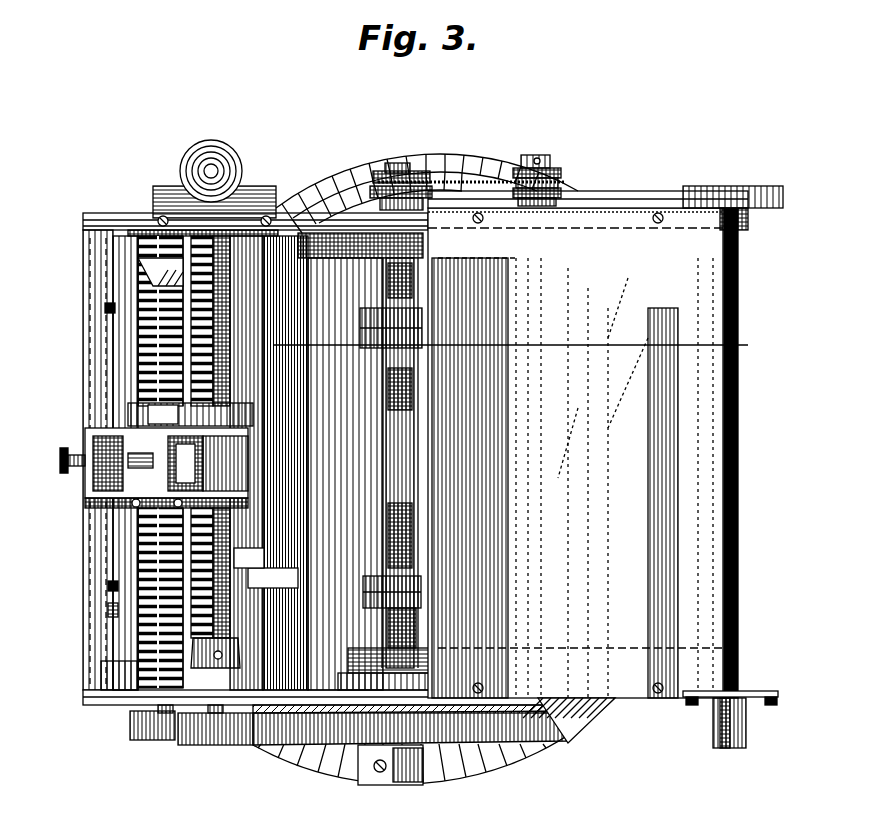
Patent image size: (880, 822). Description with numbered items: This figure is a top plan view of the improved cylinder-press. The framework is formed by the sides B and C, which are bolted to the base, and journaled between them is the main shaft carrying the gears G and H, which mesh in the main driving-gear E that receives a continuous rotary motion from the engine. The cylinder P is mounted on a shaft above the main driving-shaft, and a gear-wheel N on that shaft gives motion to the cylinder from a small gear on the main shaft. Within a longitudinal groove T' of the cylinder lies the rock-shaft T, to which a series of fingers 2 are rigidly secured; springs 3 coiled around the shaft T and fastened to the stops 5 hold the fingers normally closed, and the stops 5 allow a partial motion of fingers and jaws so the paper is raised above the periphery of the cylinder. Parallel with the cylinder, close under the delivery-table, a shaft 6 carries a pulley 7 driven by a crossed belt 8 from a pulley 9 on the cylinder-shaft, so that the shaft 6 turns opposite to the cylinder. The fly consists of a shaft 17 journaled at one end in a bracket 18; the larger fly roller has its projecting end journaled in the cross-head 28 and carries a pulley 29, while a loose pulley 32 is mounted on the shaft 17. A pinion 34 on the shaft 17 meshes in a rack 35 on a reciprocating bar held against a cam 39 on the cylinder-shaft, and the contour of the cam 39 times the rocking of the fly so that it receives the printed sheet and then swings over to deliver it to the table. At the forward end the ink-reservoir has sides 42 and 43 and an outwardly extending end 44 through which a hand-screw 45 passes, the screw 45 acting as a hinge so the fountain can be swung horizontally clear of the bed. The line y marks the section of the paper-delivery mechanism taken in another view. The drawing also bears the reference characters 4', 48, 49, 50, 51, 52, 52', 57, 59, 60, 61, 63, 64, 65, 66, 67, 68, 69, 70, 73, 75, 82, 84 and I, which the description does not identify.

The fingers 2 is at (414, 316).
The springs 3 is at (405, 378).
The bracket 4' is at (360, 257).
The stop 5 is at (412, 652).
The shaft 6 is at (537, 168).
The pulley 7 is at (556, 160).
The crossed belt 8 is at (470, 176).
The pulley 9 is at (379, 160).
The shaft 17 is at (730, 508).
The bracket 18 is at (738, 714).
The cross-head 28 is at (730, 683).
The pulley 29 is at (686, 692).
The loose pulley 32 is at (712, 702).
The pinion 34 is at (722, 200).
The rack 35 is at (605, 186).
The cam 39 is at (445, 200).
The side 42 is at (125, 690).
The side 43 is at (140, 224).
The end 44 is at (262, 178).
The hand-screw 45 is at (211, 171).
The spring 48 is at (150, 590).
The spring casing 49 is at (245, 535).
The rack segment 50 is at (152, 739).
The rack segment 51 is at (215, 740).
The side plate 52 is at (78, 460).
The slide block 52' is at (139, 447).
The coil spring 57 is at (210, 238).
The coil spring 59 is at (210, 571).
The block 60 is at (190, 414).
The knob 61 is at (143, 460).
The pin 63 is at (150, 496).
The lever 64 is at (120, 492).
The pin 65 is at (126, 497).
The pin 66 is at (176, 496).
The screw 67 is at (215, 644).
The nut 68 is at (232, 652).
The wedge 69 is at (130, 262).
The screw 70 is at (146, 258).
The support 73 is at (250, 568).
The stop 75 is at (283, 566).
The pin 82 is at (100, 602).
The stud 84 is at (97, 300).
The side B is at (255, 210).
The side C is at (310, 684).
The main driving-gear E is at (575, 703).
The gear G is at (356, 768).
The gear H is at (427, 182).
The sector I is at (505, 748).
The gear-wheel N is at (280, 745).
The cylinder P is at (323, 463).
The rock-shaft T is at (423, 463).
The longitudinal groove T' is at (441, 463).
The section line y is at (517, 344).